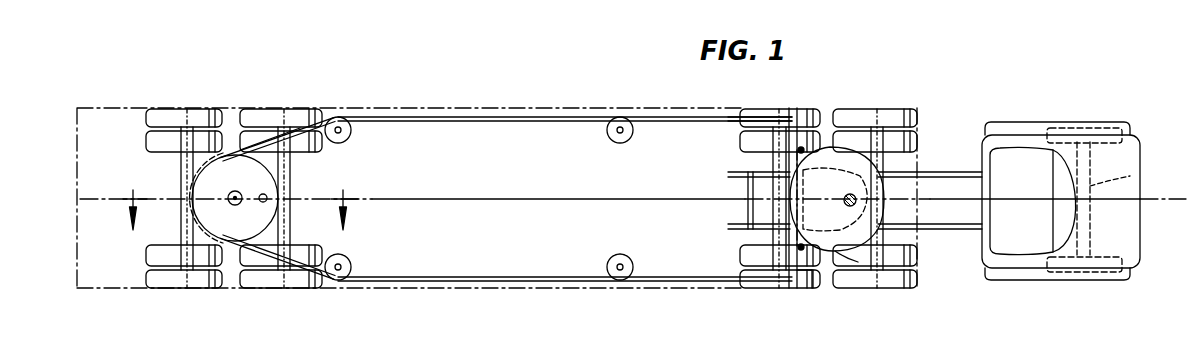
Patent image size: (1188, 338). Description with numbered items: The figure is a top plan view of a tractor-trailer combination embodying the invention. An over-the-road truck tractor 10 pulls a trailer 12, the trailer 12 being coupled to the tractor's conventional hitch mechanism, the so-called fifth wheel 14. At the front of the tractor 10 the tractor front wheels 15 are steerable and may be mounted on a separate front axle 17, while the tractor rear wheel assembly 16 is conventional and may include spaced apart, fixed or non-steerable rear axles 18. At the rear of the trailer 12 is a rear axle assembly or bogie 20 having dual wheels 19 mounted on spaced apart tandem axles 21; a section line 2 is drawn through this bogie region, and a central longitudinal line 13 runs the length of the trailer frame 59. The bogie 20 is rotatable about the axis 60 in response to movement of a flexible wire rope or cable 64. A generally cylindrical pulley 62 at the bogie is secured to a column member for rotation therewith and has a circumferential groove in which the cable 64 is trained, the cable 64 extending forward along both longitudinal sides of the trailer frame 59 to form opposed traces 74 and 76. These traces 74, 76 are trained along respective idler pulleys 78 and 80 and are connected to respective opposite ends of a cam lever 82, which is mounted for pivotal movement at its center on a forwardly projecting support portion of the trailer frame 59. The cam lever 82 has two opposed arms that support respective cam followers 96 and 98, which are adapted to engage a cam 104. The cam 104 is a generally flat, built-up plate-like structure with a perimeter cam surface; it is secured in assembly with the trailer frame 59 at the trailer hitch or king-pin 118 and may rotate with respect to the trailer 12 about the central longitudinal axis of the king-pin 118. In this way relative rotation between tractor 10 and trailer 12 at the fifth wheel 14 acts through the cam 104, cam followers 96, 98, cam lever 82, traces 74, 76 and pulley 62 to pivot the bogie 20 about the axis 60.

The section line 2- 2 is at (236, 203).
The truck tractor 10 is at (1045, 100).
The trailer 12 is at (458, 104).
The longitudinal frame member 13 is at (522, 199).
The fifth wheel 14 is at (884, 206).
The tractor front wheels 15 is at (1095, 130).
The tractor rear wheel assembly 16 is at (825, 108).
The front axle 17 is at (1130, 172).
The rear axles 18 is at (765, 233).
The dual wheels 19 is at (210, 109).
The rear axle assembly or bogie 20 is at (296, 180).
The tandem axles 21 is at (181, 226).
The trailer frame 59 is at (455, 288).
The axis 60 is at (232, 204).
The pulley 62 is at (192, 166).
The cable 64 is at (276, 126).
The trace 74 is at (545, 122).
The trace 76 is at (483, 277).
The idler pulley 78 is at (346, 120).
The idler pulley 80 is at (350, 268).
The cam lever 82 is at (770, 143).
The cam follower 96 is at (806, 148).
The cam follower 98 is at (806, 284).
The cam 104 is at (860, 262).
The king-pin 118 is at (858, 196).